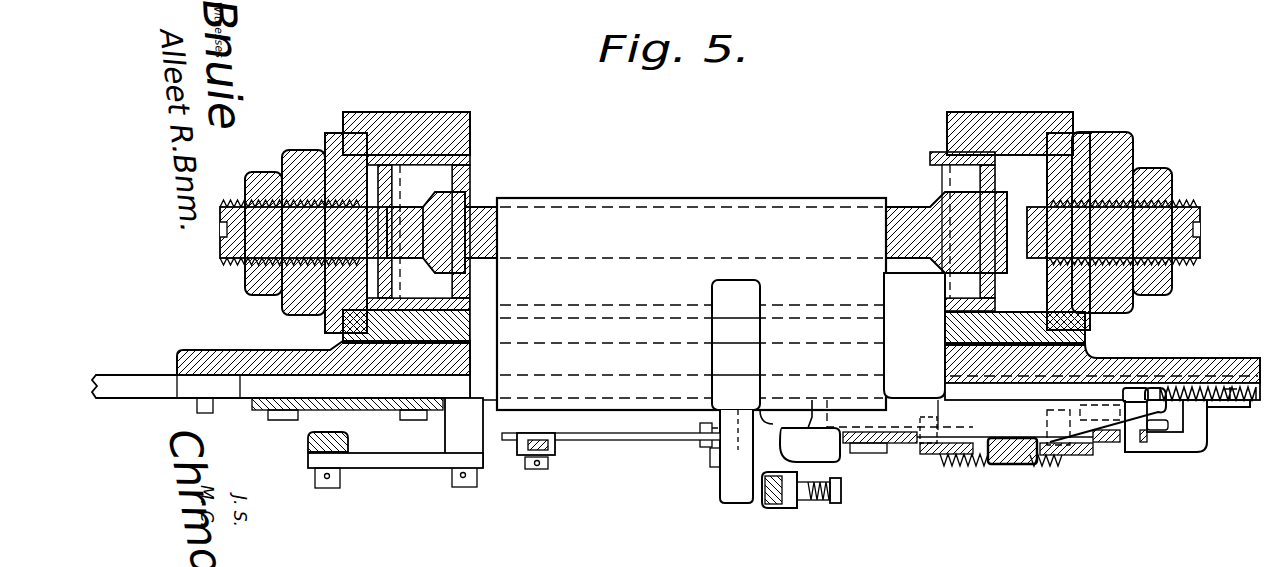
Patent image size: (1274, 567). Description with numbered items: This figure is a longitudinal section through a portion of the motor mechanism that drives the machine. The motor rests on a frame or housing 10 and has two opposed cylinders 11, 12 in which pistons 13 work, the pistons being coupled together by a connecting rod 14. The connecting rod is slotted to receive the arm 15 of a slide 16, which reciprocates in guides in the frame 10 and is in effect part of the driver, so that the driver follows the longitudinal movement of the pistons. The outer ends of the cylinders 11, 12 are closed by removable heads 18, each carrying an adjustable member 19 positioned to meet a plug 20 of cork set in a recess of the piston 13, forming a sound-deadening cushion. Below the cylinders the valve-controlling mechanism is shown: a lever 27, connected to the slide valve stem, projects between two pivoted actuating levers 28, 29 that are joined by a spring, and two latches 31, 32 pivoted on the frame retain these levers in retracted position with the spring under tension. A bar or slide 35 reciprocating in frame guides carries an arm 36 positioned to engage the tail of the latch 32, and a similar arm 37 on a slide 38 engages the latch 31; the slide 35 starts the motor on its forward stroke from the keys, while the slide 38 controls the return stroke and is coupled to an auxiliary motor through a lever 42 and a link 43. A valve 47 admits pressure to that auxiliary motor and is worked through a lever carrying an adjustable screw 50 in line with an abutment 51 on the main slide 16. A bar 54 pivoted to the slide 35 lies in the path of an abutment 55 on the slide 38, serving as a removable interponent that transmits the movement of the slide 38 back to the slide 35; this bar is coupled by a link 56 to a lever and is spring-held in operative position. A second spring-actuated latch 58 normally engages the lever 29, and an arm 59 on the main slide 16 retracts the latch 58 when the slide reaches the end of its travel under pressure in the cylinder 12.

The frame 10 is at (1240, 362).
The cylinder 11 is at (470, 145).
The cylinder 12 is at (950, 123).
The piston 13 is at (445, 189).
The connecting rod 14 is at (934, 258).
The arm 15 is at (691, 304).
The slide 16 is at (627, 406).
The removable head 18 is at (295, 156).
The adjustable member 19 is at (226, 215).
The plug 20 is at (473, 204).
The lever 27 is at (1015, 467).
The pivoted lever 28 is at (935, 458).
The pivoted lever 29 is at (1081, 456).
The latch 31 is at (853, 444).
The latch 32 is at (1123, 444).
The bar or slide 35 is at (134, 392).
The arm 36 is at (1189, 446).
The arm 37 is at (800, 431).
The slide 38 is at (464, 432).
The lever 42 is at (313, 441).
The link 43 is at (390, 463).
The valve 47 is at (786, 508).
The adjustable screw 50 is at (822, 502).
The abutment 51 is at (733, 497).
The bar 54 is at (637, 436).
The abutment 55 is at (482, 444).
The link 56 is at (551, 455).
The spring-actuated latch 58 is at (1130, 390).
The arm 59 is at (1166, 407).